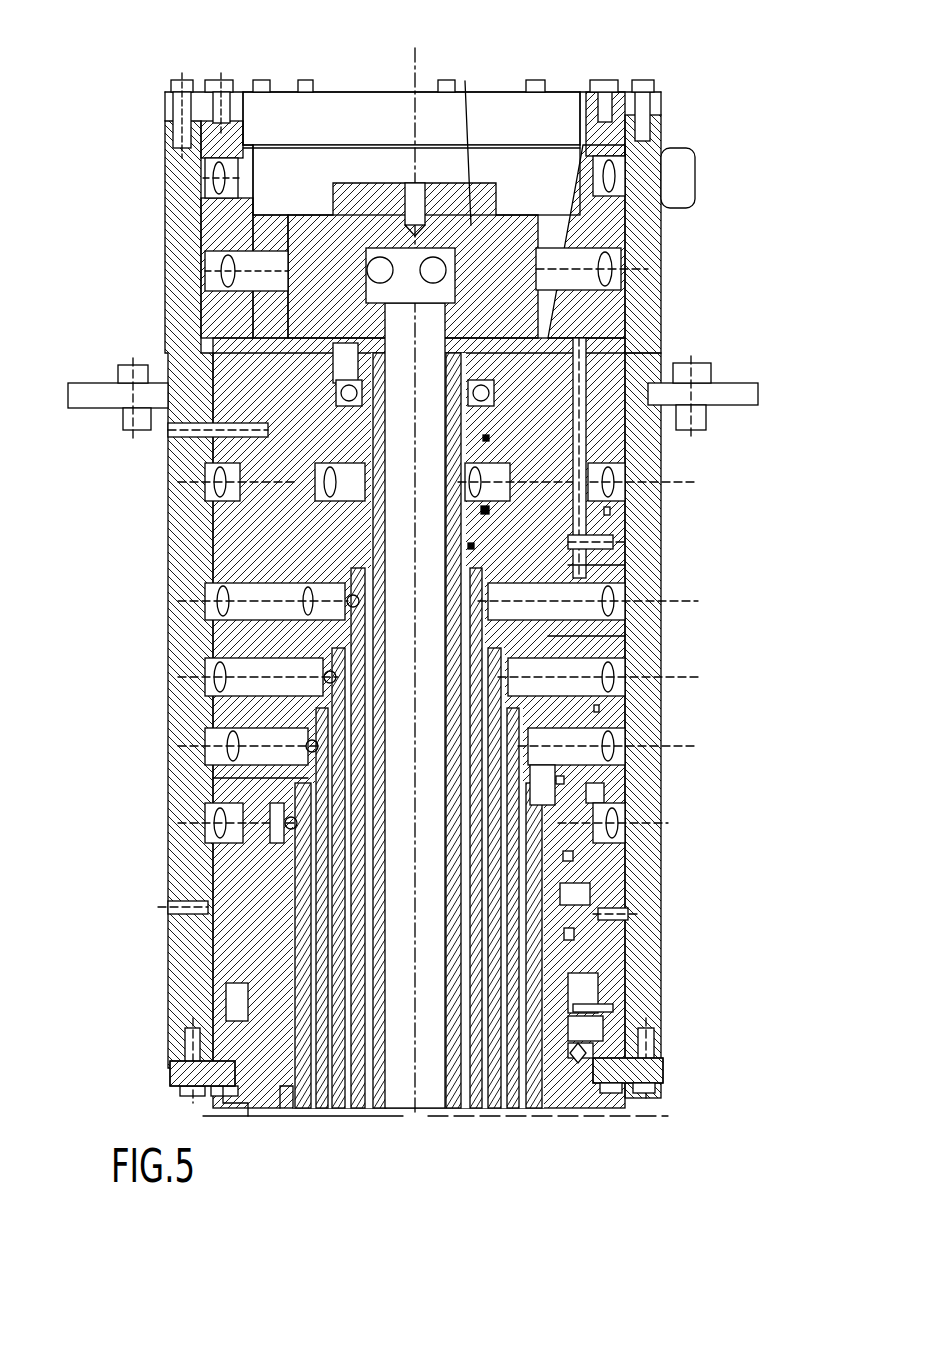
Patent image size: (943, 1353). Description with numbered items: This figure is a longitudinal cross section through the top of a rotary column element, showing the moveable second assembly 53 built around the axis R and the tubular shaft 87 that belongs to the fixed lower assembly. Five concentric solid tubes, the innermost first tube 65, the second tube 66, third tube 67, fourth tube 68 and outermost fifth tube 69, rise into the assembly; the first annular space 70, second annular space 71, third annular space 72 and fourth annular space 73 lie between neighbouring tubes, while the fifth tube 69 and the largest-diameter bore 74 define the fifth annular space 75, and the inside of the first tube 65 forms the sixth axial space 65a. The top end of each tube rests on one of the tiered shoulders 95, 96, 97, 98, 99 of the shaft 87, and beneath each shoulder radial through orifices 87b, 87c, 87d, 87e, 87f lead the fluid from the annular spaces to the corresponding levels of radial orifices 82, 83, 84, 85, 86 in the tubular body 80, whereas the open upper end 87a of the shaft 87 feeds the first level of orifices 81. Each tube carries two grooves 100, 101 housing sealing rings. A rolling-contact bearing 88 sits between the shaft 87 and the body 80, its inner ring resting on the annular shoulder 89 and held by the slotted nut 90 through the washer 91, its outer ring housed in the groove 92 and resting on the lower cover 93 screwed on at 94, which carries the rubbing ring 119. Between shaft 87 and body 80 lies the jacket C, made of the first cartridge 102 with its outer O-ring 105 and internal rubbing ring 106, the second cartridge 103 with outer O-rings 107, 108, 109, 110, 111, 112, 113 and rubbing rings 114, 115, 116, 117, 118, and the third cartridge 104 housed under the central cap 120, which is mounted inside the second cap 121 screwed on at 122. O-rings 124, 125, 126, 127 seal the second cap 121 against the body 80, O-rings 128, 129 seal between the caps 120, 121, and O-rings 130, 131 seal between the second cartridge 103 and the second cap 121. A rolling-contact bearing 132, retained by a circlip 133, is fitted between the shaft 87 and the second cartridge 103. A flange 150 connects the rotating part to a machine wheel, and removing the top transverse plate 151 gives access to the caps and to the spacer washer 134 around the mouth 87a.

The second assembly 53 is at (157, 875).
The first tube 65 is at (443, 1087).
The sixth annular axial space 65a is at (398, 1075).
The second tube 66 is at (468, 1093).
The third tube 67 is at (490, 1083).
The fourth tube 68 is at (505, 1093).
The fifth tube 69 is at (528, 1083).
The first annular space 70 is at (363, 1083).
The second annular space 71 is at (340, 1087).
The third annular space 72 is at (325, 1088).
The fourth annular space 73 is at (305, 1093).
The largest-diameter bore 74 is at (277, 1080).
The fifth annular space 75 is at (285, 1085).
The tubular body 80 is at (628, 572).
The first level of radial through orifices 81 is at (590, 255).
The second level of radial orifices 82 is at (187, 482).
The third level of radial orifices 83 is at (220, 598).
The fourth level of radial orifices 84 is at (197, 673).
The fifth level of radial orifices 85 is at (213, 732).
The sixth level of radial orifices 86 is at (607, 805).
The tubular shaft 87 is at (190, 1050).
The open tubular upper end 87a is at (455, 262).
The radial through orifice 87b is at (357, 463).
The radial through orifice 87c is at (337, 583).
The radial through orifice 87d is at (317, 658).
The radial through orifice 87e is at (298, 733).
The radial through orifice 87f is at (280, 810).
The rolling-contact bearing 88 is at (597, 1017).
The annular shoulder 89 is at (573, 1050).
The slotted nut 90 is at (567, 982).
The washer 91 is at (577, 1002).
The groove 92 is at (235, 1038).
The lower cover 93 is at (610, 1060).
The screw connection 94 is at (637, 1035).
The tiered shoulder 95 is at (528, 760).
The tiered shoulder 96 is at (470, 675).
The tiered shoulder 97 is at (467, 600).
The tiered shoulder 98 is at (462, 538).
The tiered shoulder 99 is at (477, 430).
The groove 100 is at (213, 442).
The groove 101 is at (207, 422).
The first cartridge 102 is at (572, 905).
The second cartridge 103 is at (573, 787).
The third cartridge 104 is at (238, 322).
The outer O-ring 105 is at (583, 913).
The internal rubbing sealing ring 106 is at (580, 945).
The outer O-ring 107 is at (262, 856).
The outer O-ring 108 is at (220, 770).
The outer O-ring 109 is at (587, 700).
The outer O-ring 110 is at (619, 628).
The outer O-ring 111 is at (598, 557).
The outer O-ring 112 is at (598, 503).
The outer O-ring 113 is at (619, 437).
The rubbing sealing ring 114 is at (567, 845).
The rubbing sealing ring 115 is at (577, 770).
The rubbing sealing ring 116 is at (600, 542).
The rubbing sealing ring 117 is at (478, 503).
The rubbing sealing ring 118 is at (600, 422).
The rubbing ring 119 is at (255, 1060).
The central cap 120 is at (463, 134).
The second cap 121 is at (577, 215).
The screw connection 122 is at (636, 95).
The O-ring 124 is at (619, 297).
The O-ring 125 is at (620, 227).
The O-ring 126 is at (622, 197).
The O-ring 127 is at (627, 130).
The O-ring 128 is at (268, 318).
The O-ring 129 is at (275, 222).
The O-ring 130 is at (328, 383).
The O-ring 131 is at (330, 350).
The rolling-contact bearing 132 is at (120, 370).
The circlip 133 is at (318, 378).
The washer 134 is at (303, 207).
The flange 150 is at (723, 383).
The top transverse plate 151 is at (335, 82).
The jacket C is at (270, 525).
The axis R is at (400, 48).